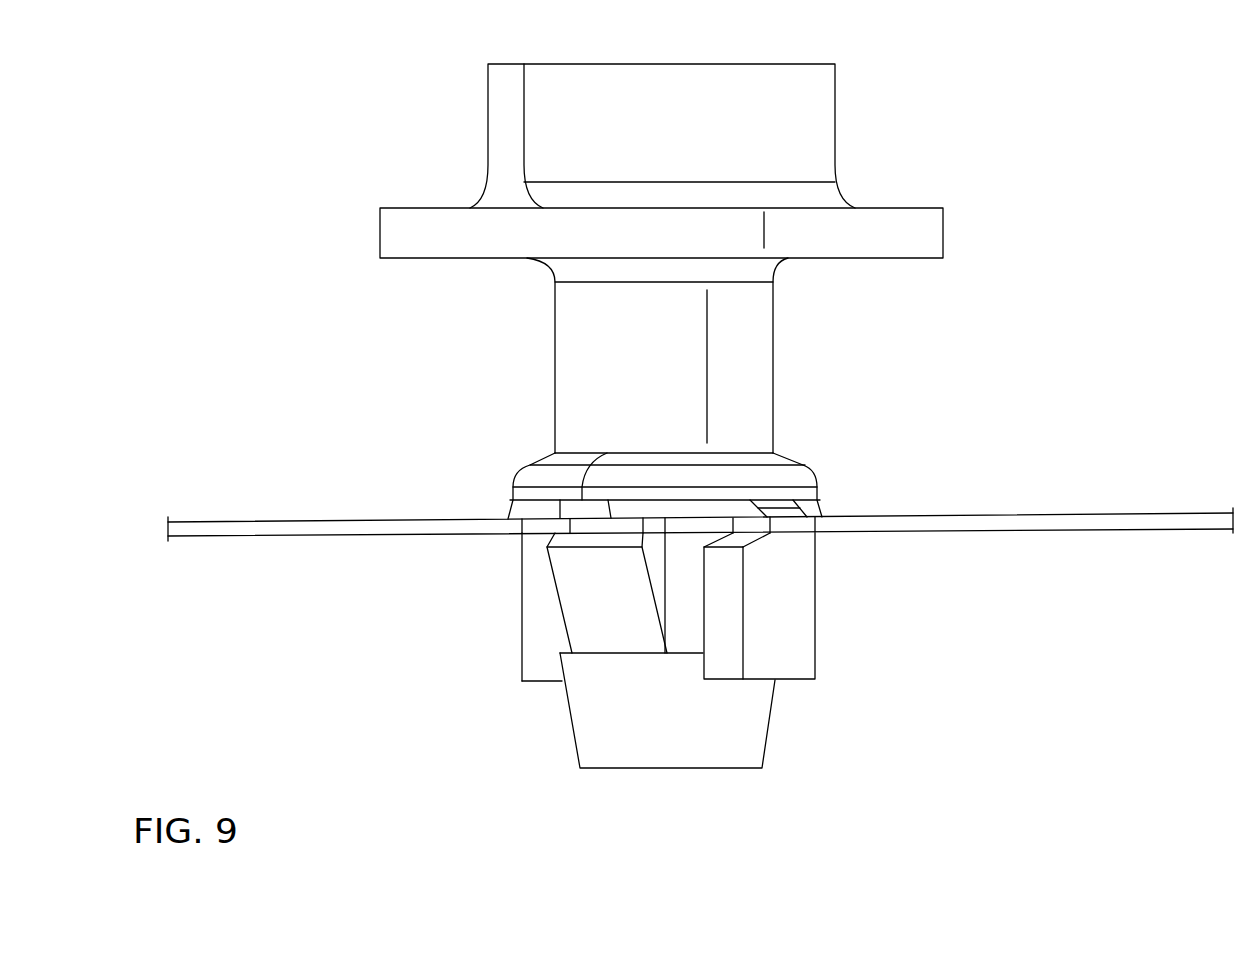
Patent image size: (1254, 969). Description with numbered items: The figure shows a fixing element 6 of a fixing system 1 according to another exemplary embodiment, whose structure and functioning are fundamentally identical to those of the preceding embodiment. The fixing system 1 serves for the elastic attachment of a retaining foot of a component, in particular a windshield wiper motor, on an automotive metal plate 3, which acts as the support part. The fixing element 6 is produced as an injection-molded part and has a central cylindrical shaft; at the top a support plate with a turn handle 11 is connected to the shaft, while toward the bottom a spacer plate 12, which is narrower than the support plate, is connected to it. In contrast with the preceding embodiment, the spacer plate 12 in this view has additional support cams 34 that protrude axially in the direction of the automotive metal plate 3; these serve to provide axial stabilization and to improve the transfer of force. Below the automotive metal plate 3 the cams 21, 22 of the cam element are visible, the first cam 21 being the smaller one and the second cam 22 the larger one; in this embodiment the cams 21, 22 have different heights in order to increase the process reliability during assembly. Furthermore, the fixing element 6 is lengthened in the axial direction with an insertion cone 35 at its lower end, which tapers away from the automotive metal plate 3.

The fixing system 1 is at (922, 158).
The turn handle 11 is at (825, 113).
The fixing element 6 is at (508, 299).
The spacer plate 12 is at (805, 475).
The support cams 34 is at (813, 493).
The automotive metal plate 3 is at (1108, 518).
The second cam 22 is at (582, 623).
The first cam 21 is at (797, 622).
The insertion cone 35 is at (752, 728).